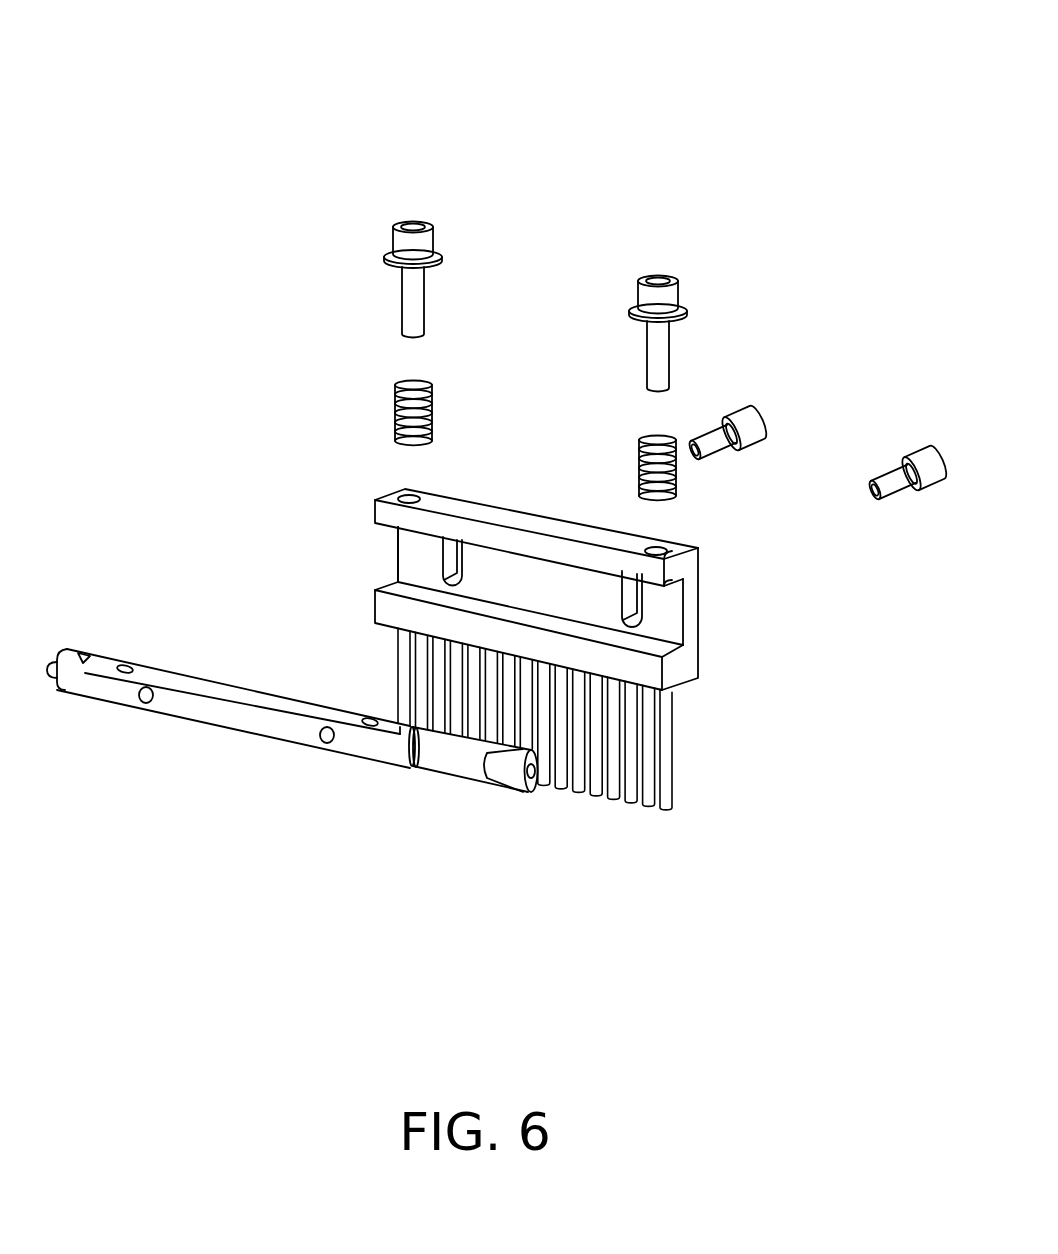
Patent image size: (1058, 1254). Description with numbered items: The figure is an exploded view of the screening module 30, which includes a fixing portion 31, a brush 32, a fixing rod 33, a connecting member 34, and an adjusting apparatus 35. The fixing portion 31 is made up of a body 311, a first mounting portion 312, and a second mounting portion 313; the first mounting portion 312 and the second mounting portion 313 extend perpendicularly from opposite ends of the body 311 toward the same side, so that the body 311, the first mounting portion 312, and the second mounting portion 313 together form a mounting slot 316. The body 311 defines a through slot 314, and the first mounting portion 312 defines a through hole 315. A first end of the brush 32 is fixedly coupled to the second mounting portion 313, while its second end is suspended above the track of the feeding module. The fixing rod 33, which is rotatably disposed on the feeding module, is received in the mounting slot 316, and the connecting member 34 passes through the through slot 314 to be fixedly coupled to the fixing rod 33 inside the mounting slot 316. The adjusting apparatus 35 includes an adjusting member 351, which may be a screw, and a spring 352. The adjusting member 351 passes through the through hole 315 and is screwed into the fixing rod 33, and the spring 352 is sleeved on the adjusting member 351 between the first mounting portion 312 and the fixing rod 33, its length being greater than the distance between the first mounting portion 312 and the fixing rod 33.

The screening module 30 is at (451, 67).
The fixing portion 31 is at (569, 562).
The body 311 is at (537, 572).
The first mounting portion 312 is at (539, 510).
The second mounting portion 313 is at (587, 636).
The through slot 314 is at (624, 592).
The through hole 315 is at (401, 492).
The mounting slot 316 is at (385, 549).
The brush 32 is at (665, 757).
The fixing rod 33 is at (243, 717).
The connecting member 34 is at (906, 481).
The adjusting apparatus 35 is at (535, 361).
The adjusting member 351 is at (657, 363).
The spring 352 is at (597, 275).